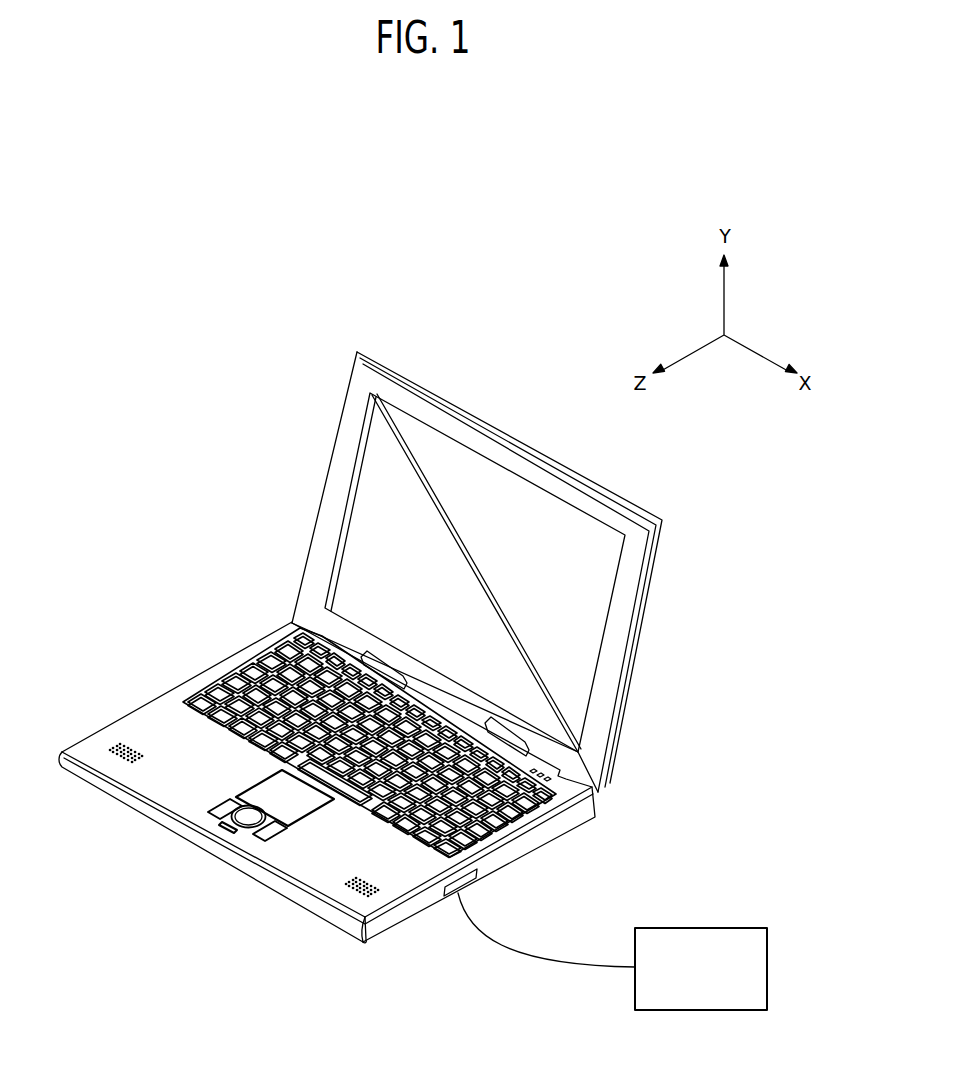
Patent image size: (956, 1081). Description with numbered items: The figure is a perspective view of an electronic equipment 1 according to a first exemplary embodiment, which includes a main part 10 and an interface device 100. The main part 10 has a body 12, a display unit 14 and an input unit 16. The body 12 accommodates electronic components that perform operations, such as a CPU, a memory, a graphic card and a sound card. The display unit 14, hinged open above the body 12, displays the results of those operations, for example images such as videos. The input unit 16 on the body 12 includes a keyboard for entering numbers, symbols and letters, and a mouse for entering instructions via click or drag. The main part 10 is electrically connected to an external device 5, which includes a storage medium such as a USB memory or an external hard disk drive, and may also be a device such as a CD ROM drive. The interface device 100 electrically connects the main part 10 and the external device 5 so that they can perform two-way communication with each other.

The electronic equipment 1 is at (222, 343).
The external device 5 is at (699, 928).
The main part 10 is at (254, 465).
The body 12 is at (158, 718).
The display unit 14 is at (360, 513).
The input unit 16 is at (262, 793).
The interface device 100 is at (453, 898).